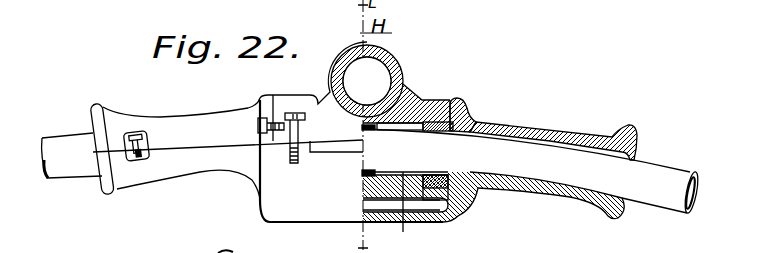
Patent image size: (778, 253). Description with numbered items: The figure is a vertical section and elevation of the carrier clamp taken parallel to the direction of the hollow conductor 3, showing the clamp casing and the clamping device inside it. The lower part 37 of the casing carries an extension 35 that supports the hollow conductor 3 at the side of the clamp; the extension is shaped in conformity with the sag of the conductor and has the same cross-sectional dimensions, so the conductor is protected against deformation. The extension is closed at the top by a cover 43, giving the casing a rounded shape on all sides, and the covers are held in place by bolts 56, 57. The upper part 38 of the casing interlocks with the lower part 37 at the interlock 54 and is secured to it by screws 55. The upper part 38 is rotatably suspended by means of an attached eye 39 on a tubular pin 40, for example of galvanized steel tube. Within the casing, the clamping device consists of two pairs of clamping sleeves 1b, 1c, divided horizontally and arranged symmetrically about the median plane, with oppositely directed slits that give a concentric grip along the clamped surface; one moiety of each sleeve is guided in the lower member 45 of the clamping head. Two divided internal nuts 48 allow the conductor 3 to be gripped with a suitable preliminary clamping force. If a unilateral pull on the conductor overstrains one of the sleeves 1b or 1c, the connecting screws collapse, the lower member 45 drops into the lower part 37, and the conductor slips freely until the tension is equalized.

The hollow conductor 3 is at (680, 155).
The clamping sleeve 1b is at (360, 172).
The clamping sleeve 1c is at (380, 247).
The extension 35 is at (581, 192).
The lower part of the carrier clamp casing 37 is at (472, 192).
The upper part of the casing 38 is at (330, 88).
The eye 39 is at (378, 53).
The tubular pin 40 is at (393, 63).
The cover 43 is at (183, 117).
The lower member of the clamping head 45 is at (430, 197).
The divided internal nut 48 is at (452, 104).
The interlock 54 is at (312, 155).
The screw 55 is at (299, 130).
The bolt 56 is at (135, 161).
The bolt 57 is at (258, 122).